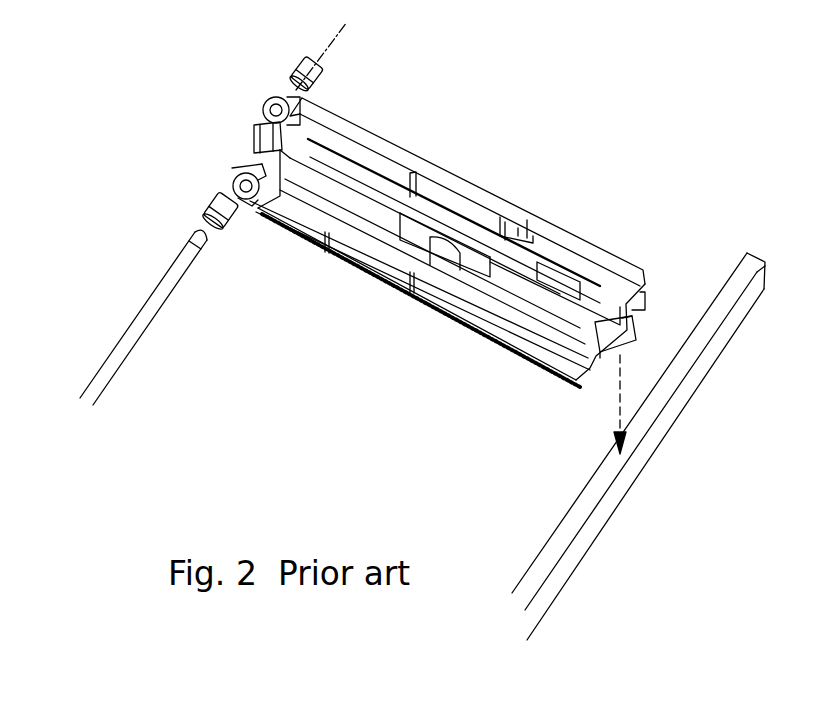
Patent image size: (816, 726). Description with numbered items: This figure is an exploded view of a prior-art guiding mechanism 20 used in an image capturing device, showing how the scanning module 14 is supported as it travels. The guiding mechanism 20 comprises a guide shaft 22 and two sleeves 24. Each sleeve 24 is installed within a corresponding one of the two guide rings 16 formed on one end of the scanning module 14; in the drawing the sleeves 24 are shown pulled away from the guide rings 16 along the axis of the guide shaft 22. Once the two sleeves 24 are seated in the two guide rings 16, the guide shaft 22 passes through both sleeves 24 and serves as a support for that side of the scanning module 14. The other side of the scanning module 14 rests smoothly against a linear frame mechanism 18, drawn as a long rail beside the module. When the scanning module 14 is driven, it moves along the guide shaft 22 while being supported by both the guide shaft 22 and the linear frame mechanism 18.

The guiding mechanism 20 is at (110, 150).
The scanning module 14 is at (380, 152).
The guide rings 16 is at (262, 108).
The sleeves 24 is at (296, 64).
The guide shaft 22 is at (187, 243).
The linear frame mechanism 18 is at (672, 380).